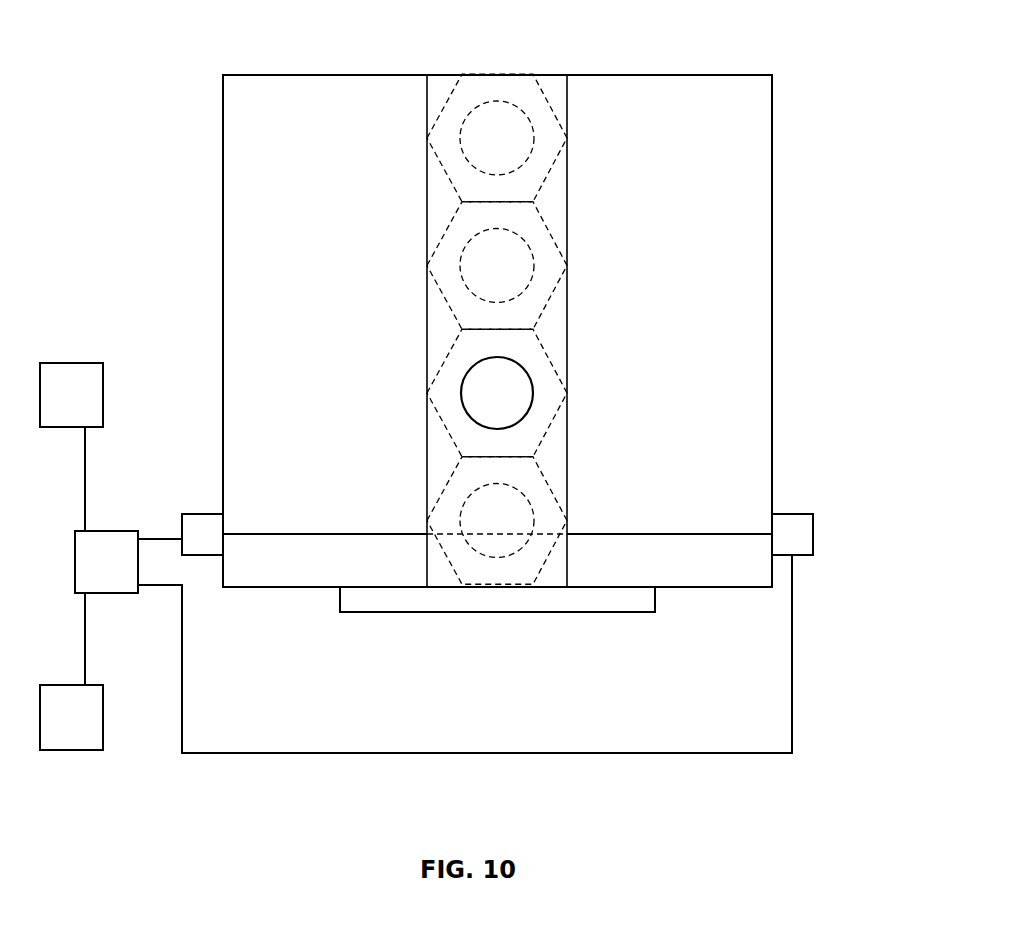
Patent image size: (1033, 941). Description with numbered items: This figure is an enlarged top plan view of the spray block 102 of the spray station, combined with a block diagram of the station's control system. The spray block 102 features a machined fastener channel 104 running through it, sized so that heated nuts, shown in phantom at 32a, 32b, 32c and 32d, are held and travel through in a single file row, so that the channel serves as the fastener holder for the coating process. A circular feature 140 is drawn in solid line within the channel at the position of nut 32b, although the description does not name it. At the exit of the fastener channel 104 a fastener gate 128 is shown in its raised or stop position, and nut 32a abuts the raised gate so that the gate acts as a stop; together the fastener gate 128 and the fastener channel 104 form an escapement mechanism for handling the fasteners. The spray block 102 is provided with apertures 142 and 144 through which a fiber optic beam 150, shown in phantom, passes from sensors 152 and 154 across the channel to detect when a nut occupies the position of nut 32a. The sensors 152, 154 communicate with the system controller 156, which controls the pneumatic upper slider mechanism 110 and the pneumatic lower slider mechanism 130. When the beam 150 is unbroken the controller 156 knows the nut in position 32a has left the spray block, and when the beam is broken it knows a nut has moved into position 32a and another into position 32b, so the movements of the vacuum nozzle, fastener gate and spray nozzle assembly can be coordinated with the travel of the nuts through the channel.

The spray block 102 is at (222, 188).
The machined fastener channel 104 is at (558, 86).
The heated nut 32a is at (553, 550).
The heated nut 32b is at (552, 420).
The heated nut 32c is at (552, 293).
The heated nut 32d is at (549, 172).
The beam spot 140 is at (461, 390).
The fiber optic beam 150 is at (495, 533).
The aperture 142 is at (280, 537).
The aperture 144 is at (675, 533).
The fastener gate 128 is at (375, 613).
The pneumatic upper slider mechanism 110 is at (72, 362).
The system controller 156 is at (105, 530).
The pneumatic lower slider mechanism 130 is at (72, 751).
The sensor 152 is at (203, 513).
The sensor 154 is at (813, 532).